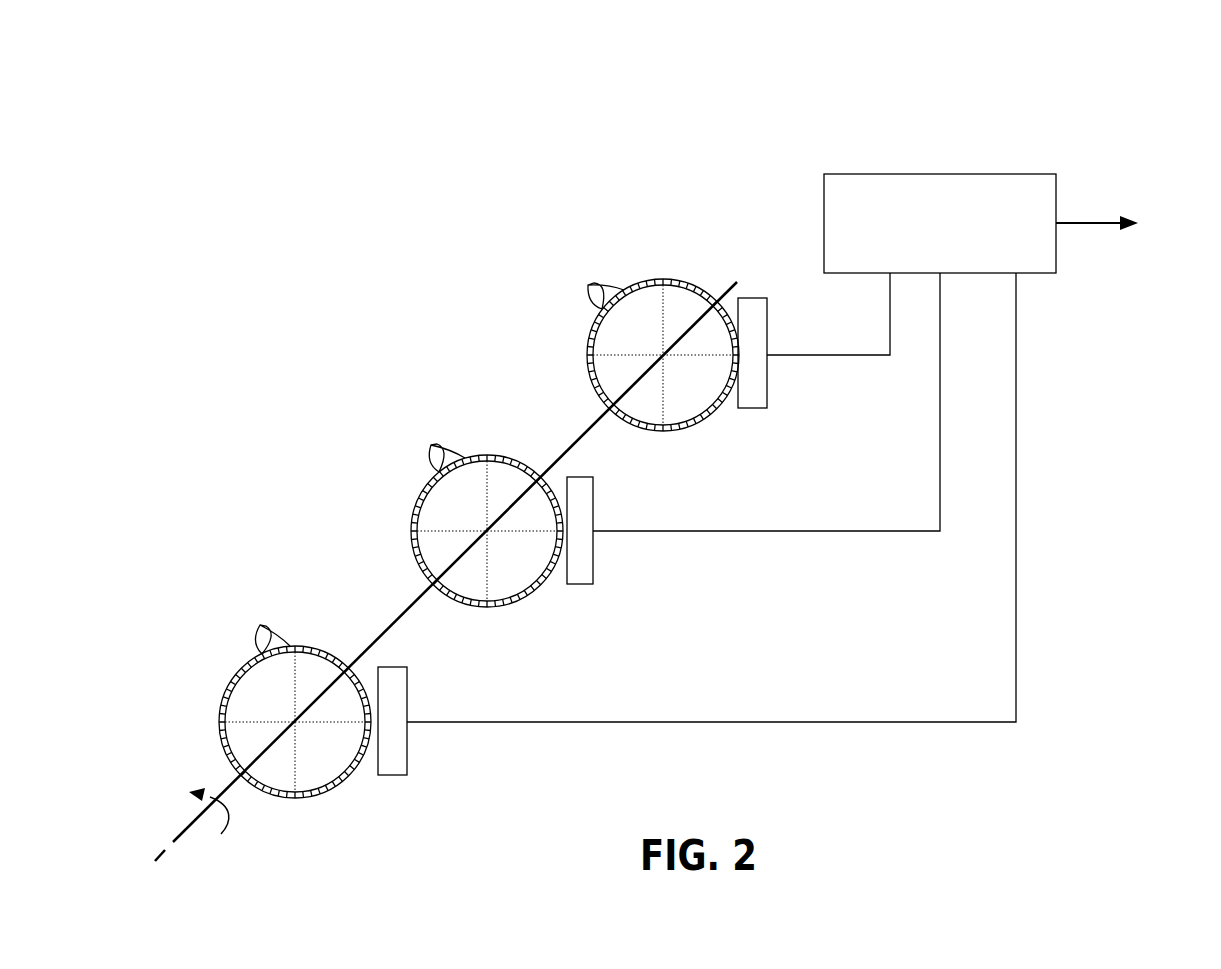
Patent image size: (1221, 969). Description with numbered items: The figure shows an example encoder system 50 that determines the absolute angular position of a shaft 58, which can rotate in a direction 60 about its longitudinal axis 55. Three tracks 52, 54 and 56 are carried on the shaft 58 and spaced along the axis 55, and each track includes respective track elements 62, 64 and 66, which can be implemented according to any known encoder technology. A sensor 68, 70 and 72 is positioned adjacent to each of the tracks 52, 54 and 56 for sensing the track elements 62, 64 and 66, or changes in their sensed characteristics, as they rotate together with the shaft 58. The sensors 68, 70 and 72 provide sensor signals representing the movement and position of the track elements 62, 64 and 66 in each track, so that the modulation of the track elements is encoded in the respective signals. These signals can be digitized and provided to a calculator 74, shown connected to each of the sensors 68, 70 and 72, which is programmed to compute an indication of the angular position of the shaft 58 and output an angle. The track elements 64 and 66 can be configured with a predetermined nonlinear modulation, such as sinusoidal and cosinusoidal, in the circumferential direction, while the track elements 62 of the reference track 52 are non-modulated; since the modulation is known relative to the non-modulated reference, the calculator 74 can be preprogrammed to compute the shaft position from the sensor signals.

The encoder system 50 is at (1097, 118).
The track 52 is at (336, 801).
The track 54 is at (531, 616).
The longitudinal axis 55 is at (160, 856).
The track 56 is at (708, 436).
The shaft 58 is at (722, 293).
The direction 60 is at (226, 812).
The track elements 62 is at (261, 626).
The track elements 64 is at (432, 445).
The track elements 66 is at (589, 286).
The sensor 68 is at (407, 738).
The sensor 70 is at (593, 555).
The sensor 72 is at (767, 382).
The calculator 74 is at (965, 173).